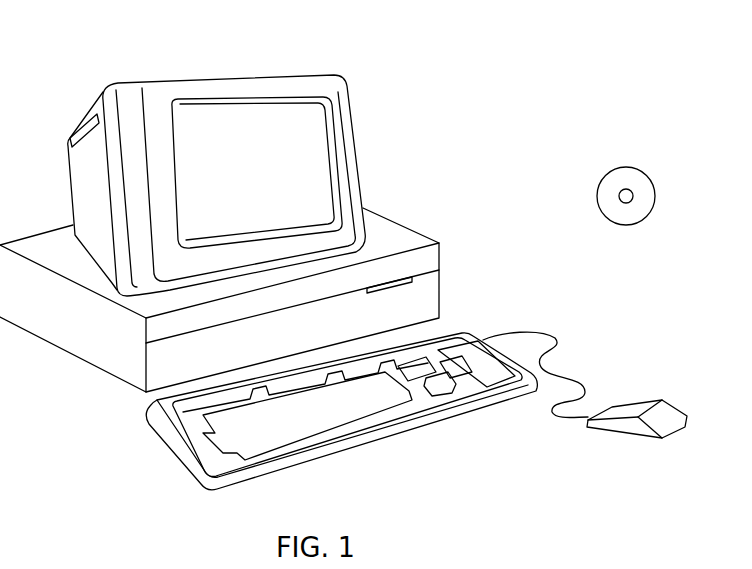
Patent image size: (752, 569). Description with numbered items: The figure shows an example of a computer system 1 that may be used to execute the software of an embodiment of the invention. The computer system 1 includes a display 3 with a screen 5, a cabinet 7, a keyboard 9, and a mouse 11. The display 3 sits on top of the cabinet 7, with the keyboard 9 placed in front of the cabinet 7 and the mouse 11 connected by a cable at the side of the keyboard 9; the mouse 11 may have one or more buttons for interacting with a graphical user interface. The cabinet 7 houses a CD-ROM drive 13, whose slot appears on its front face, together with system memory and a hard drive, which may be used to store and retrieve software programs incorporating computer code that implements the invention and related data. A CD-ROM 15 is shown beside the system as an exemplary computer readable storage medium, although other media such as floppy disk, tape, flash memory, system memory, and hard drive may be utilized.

The computer system 1 is at (546, 55).
The display 3 is at (362, 178).
The screen 5 is at (320, 136).
The cabinet 7 is at (118, 377).
The keyboard 9 is at (347, 451).
The mouse 11 is at (676, 402).
The CD-ROM drive 13 is at (413, 281).
The CD-ROM 15 is at (641, 166).